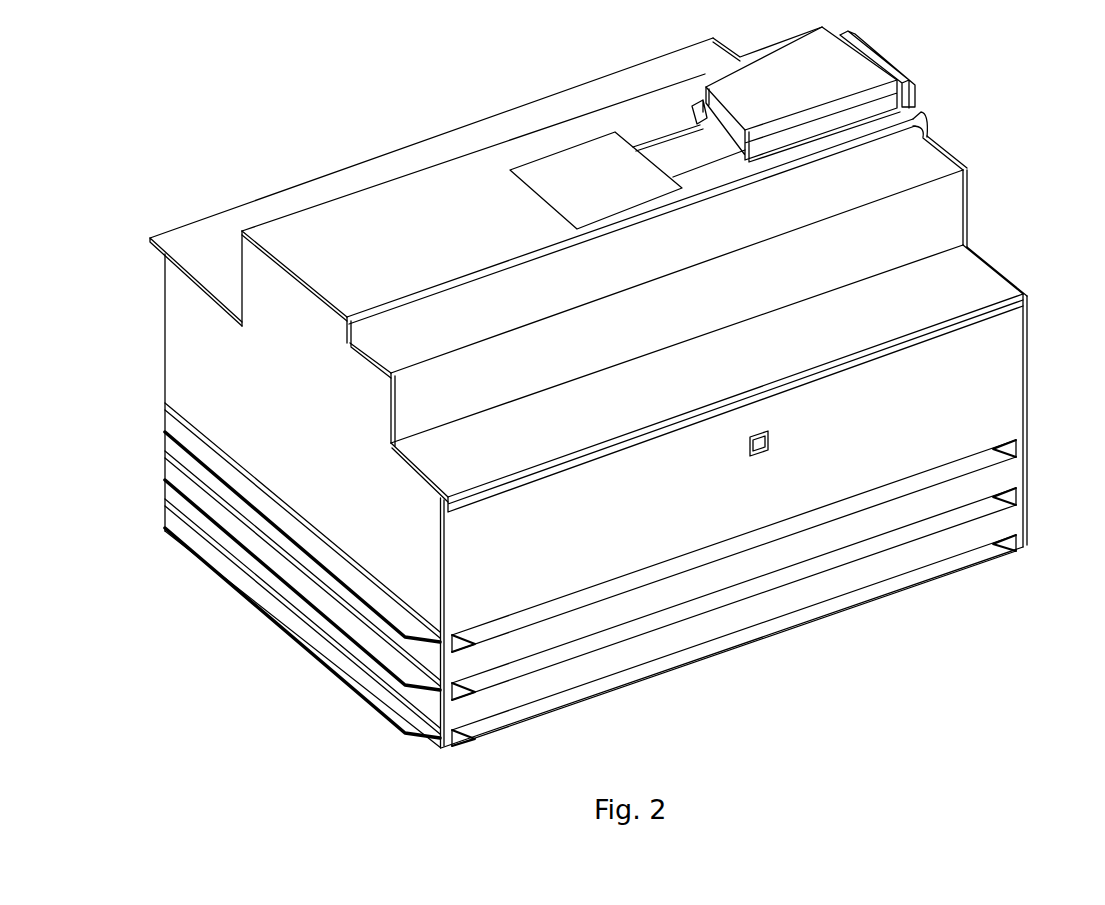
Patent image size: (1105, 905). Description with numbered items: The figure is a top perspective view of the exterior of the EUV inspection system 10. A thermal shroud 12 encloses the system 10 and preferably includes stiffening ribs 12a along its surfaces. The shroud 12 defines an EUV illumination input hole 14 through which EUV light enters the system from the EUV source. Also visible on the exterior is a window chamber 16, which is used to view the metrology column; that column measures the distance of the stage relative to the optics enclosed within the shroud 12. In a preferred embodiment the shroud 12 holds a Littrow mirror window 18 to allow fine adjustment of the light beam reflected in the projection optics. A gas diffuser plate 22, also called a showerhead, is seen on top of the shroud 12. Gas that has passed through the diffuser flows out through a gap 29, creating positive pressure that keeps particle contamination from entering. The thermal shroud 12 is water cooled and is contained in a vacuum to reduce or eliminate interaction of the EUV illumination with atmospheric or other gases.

The EUV inspection system 10 is at (273, 110).
The thermal shroud 12 is at (197, 363).
The stiffening ribs 12a is at (224, 530).
The EUV illumination input hole 14 is at (768, 448).
The window chamber 16 is at (745, 112).
The Littrow mirror window 18 is at (680, 148).
The gas diffuser plate 22 is at (566, 168).
The gap 29 is at (446, 506).